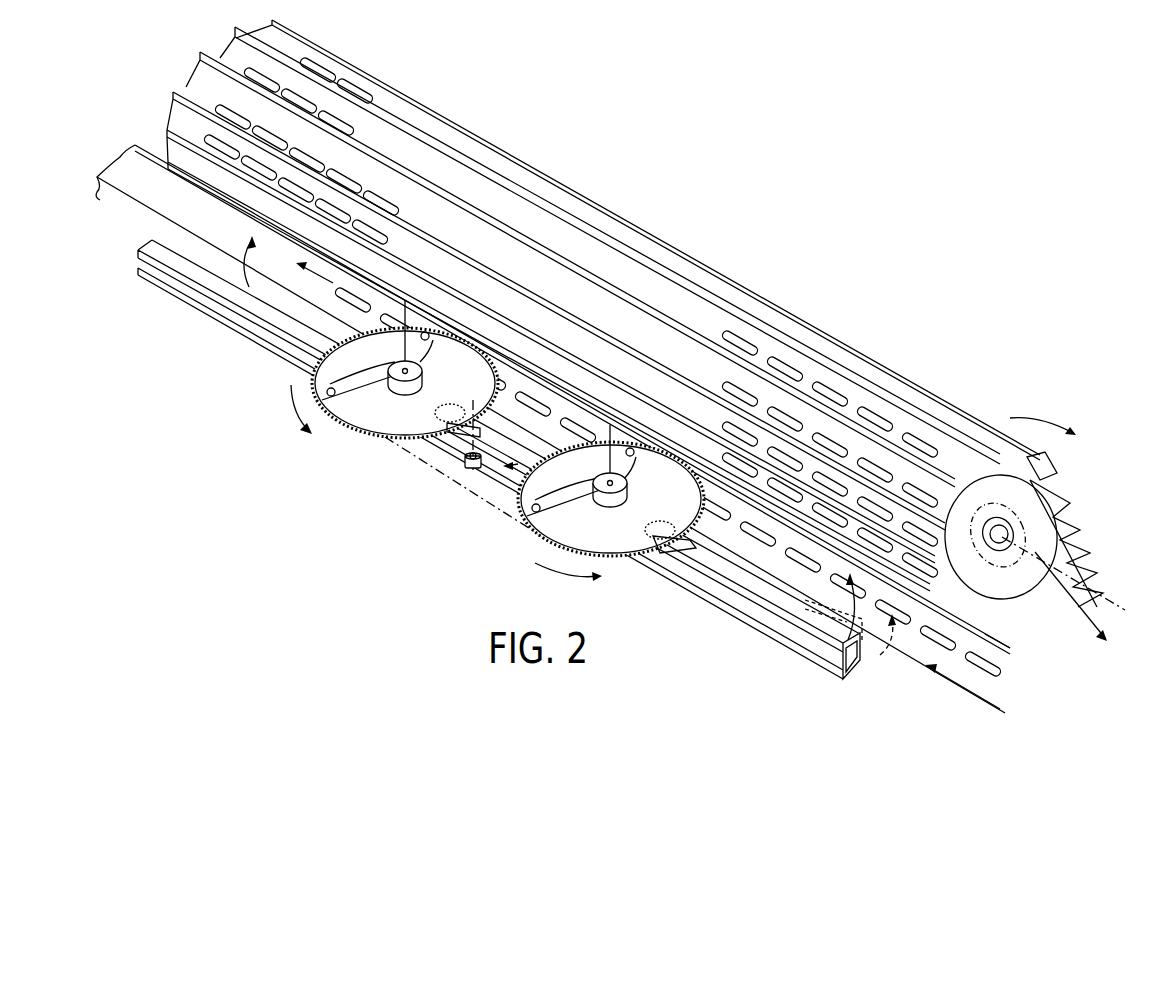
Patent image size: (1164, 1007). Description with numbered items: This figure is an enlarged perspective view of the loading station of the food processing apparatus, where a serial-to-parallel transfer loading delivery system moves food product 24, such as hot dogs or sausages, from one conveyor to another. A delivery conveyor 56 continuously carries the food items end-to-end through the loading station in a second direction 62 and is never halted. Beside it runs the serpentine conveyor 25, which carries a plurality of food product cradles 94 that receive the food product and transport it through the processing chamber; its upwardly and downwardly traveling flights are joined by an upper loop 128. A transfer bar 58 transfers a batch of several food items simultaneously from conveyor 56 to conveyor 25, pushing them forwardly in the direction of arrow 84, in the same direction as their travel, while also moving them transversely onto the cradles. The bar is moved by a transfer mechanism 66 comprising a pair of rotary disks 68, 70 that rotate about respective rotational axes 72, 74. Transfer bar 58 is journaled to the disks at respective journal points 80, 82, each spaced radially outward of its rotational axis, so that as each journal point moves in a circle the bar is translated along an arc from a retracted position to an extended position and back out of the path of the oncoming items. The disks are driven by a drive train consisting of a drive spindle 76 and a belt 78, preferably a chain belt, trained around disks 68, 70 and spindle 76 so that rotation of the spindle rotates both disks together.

The food product 24 is at (965, 642).
The conveyor 25 is at (1065, 520).
The conveyor 56 is at (1010, 646).
The transfer bar 58 is at (765, 603).
The second direction 62 is at (975, 695).
The transfer mechanism 66 is at (304, 435).
The rotary disk 68 is at (365, 430).
The rotary disk 70 is at (565, 533).
The rotational axis 72 is at (412, 340).
The rotational axis 74 is at (612, 455).
The drive spindle 76 is at (468, 463).
The belt 78 is at (470, 496).
The journal point 80 is at (458, 418).
The journal point 82 is at (658, 534).
The arrow 84 is at (835, 616).
The food product cradle 94 is at (1033, 469).
The upper loop 128 is at (1004, 572).